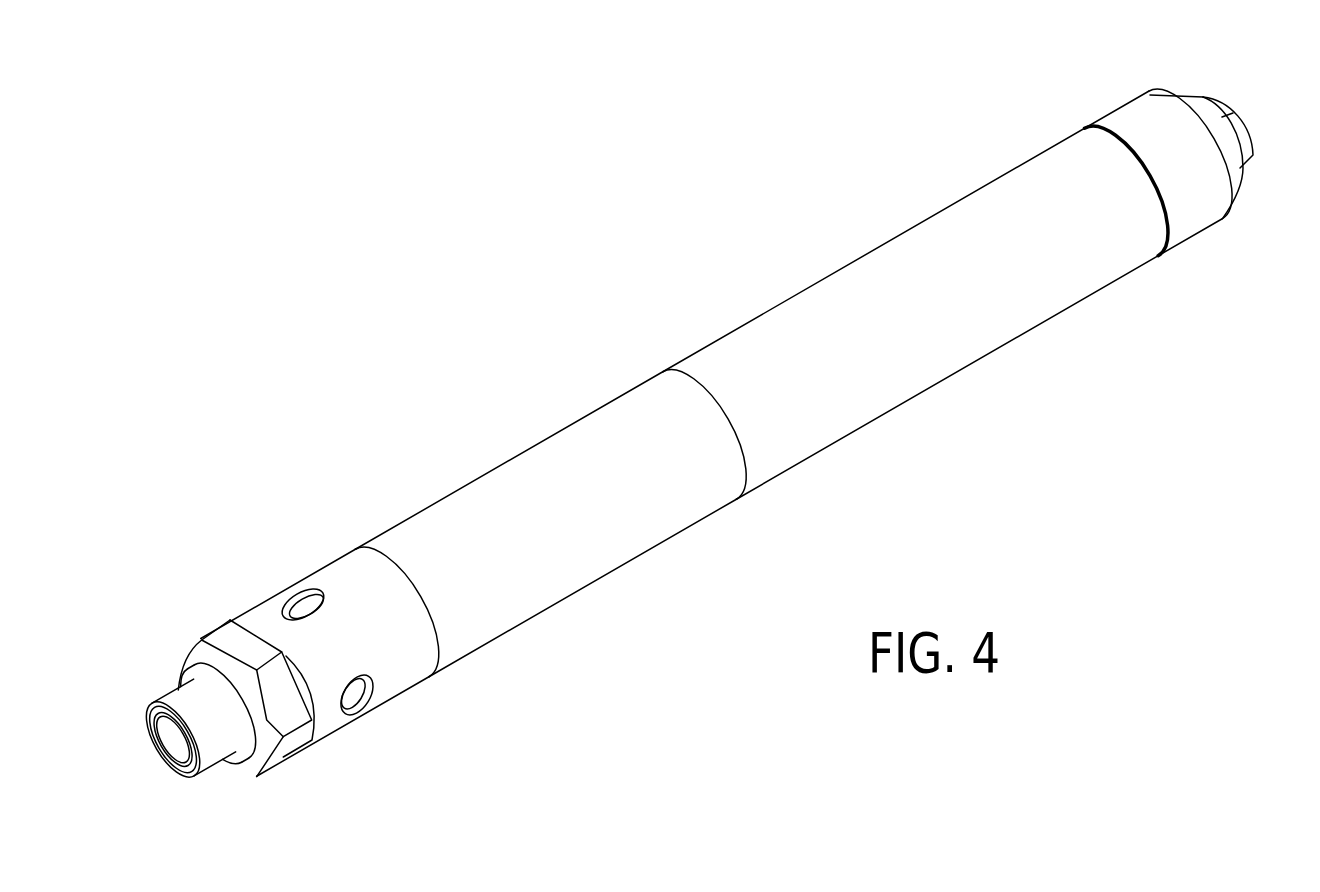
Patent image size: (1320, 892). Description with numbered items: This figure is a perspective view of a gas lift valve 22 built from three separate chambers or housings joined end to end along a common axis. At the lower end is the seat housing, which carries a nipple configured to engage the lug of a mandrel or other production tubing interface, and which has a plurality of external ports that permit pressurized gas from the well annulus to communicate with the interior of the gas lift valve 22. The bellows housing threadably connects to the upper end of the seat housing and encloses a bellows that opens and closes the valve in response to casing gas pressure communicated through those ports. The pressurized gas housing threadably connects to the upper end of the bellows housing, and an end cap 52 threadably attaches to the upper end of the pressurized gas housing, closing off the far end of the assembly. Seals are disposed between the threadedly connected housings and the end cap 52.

The gas lift valve 22 is at (557, 173).
The end cap 52 is at (1210, 214).